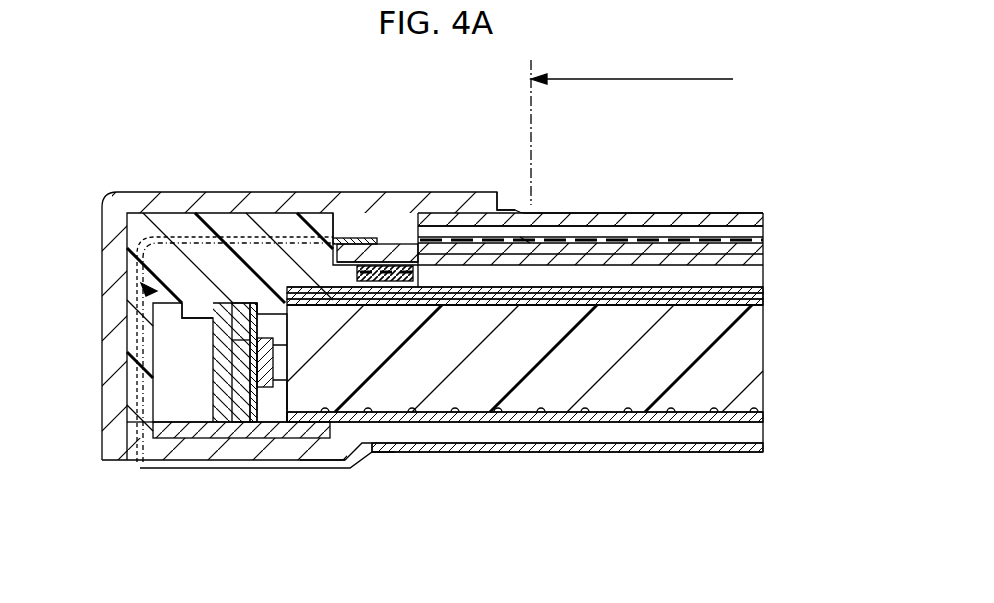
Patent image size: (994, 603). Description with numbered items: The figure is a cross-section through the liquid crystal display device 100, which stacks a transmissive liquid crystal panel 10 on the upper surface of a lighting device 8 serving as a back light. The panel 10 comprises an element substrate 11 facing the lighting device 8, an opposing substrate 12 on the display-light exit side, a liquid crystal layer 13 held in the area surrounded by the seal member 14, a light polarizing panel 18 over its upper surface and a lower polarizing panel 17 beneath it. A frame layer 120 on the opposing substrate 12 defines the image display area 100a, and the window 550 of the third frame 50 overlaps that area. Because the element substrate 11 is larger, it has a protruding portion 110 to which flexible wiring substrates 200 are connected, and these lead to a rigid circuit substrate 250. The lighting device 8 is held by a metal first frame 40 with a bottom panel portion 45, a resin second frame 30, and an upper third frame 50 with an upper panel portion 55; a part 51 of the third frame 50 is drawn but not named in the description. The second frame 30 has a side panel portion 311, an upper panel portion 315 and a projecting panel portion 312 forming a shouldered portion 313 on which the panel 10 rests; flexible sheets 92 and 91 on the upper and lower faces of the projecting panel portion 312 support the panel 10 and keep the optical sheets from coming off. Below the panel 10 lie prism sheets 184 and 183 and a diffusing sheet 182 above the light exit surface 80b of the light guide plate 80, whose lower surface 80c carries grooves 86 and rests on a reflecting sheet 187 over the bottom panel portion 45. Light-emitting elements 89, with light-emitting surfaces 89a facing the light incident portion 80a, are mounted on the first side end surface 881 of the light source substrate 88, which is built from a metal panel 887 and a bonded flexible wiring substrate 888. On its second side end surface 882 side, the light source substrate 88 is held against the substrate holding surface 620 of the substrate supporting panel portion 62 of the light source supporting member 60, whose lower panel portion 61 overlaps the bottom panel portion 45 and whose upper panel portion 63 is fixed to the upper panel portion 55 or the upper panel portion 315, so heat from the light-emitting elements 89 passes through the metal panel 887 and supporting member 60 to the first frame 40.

The liquid crystal display device 100 is at (477, 77).
The image display area 100a is at (632, 70).
The lighting device 8 is at (836, 224).
The liquid crystal panel 10 is at (683, 150).
The element substrate 11 is at (570, 248).
The opposing substrate 12 is at (658, 222).
The liquid crystal layer 13 is at (600, 240).
The seal member 14 is at (500, 212).
The lower polarizing panel 17 is at (716, 288).
The light polarizing panel 18 is at (700, 214).
The second frame 30 is at (142, 283).
The first frame 40 is at (416, 447).
The bottom panel portion 45 is at (450, 438).
The third frame 50 is at (125, 180).
The side wall 51 is at (110, 262).
The upper panel portion 55 is at (145, 193).
The light source supporting member 60 is at (172, 470).
The lower panel portion 61 is at (165, 470).
The substrate supporting panel portion 62 is at (262, 350).
The upper panel portion 63 is at (218, 318).
The light guide plate 80 is at (612, 380).
The light incident portion 80a is at (287, 405).
The light exit surface 80b is at (745, 305).
The lower surface 80c is at (650, 422).
The grooves 86 is at (690, 422).
The light source substrate 88 is at (265, 510).
The light-emitting elements 89 is at (265, 380).
The light-emitting surfaces 89a is at (298, 395).
The flexible sheet 91 is at (381, 257).
The flexible sheet 92 is at (393, 272).
The protruding portion 110 is at (397, 250).
The frame layer 120 is at (520, 242).
The diffusing sheet 182 is at (765, 304).
The prism sheet 183 is at (765, 297).
The prism sheet 184 is at (765, 289).
The reflecting sheet 187 is at (752, 452).
The flexible wiring substrates 200 is at (357, 240).
The circuit substrate 250 is at (494, 452).
The side panel portion 311 is at (135, 400).
The projecting panel portion 312 is at (512, 302).
The shouldered portion 313 is at (337, 232).
The upper panel portion 315 is at (172, 231).
The window 550 is at (500, 205).
The substrate holding surface 620 is at (233, 350).
The first side end surface 881 is at (281, 313).
The second side end surface 882 is at (196, 322).
The metal panel 887 is at (243, 420).
The flexible wiring substrate 888 is at (258, 420).